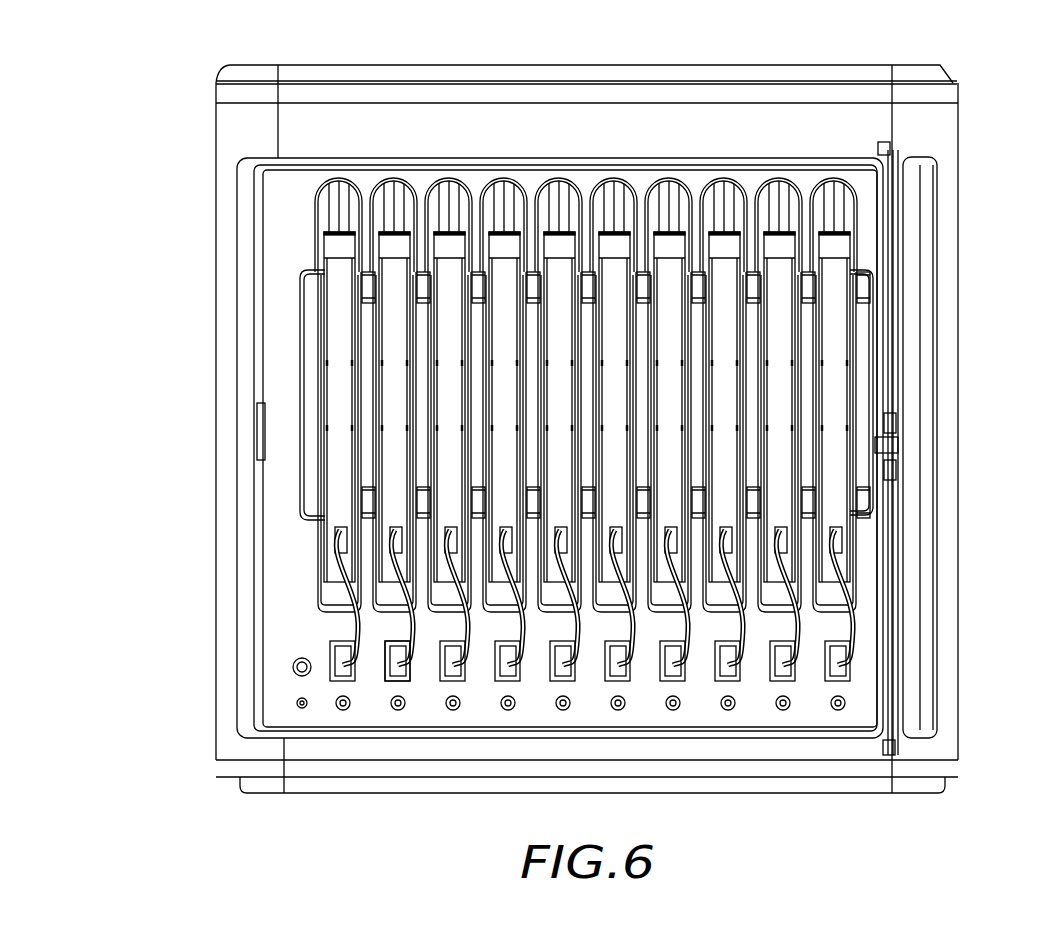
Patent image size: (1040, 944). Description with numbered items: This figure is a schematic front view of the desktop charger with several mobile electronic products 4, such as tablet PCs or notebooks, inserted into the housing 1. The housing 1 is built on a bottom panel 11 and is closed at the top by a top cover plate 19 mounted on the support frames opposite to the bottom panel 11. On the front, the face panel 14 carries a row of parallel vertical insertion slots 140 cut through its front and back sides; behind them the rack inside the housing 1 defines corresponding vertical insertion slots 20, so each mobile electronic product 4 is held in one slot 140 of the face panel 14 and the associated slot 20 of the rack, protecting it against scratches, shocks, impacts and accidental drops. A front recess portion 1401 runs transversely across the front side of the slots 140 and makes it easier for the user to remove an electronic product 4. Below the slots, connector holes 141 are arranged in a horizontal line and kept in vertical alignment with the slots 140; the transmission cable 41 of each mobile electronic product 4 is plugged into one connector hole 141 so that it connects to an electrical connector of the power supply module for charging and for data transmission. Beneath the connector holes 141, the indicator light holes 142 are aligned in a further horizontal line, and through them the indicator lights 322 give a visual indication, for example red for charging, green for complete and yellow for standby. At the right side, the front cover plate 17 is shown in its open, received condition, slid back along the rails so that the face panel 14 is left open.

The housing 1 is at (530, 419).
The top cover plate 19 is at (933, 77).
The face panel 14 is at (938, 145).
The bottom panel 11 is at (952, 777).
The front cover plate 17 is at (913, 328).
The vertical insertion slots 20 is at (320, 221).
The mobile electronic product 4 is at (335, 385).
The front recess portion 1401 is at (313, 468).
The vertical insertion slots 140 is at (320, 568).
The transmission cable 41 is at (358, 634).
The connector holes 141 is at (400, 682).
The indicator light holes 142 is at (343, 710).
The indicator lights 322 is at (508, 710).